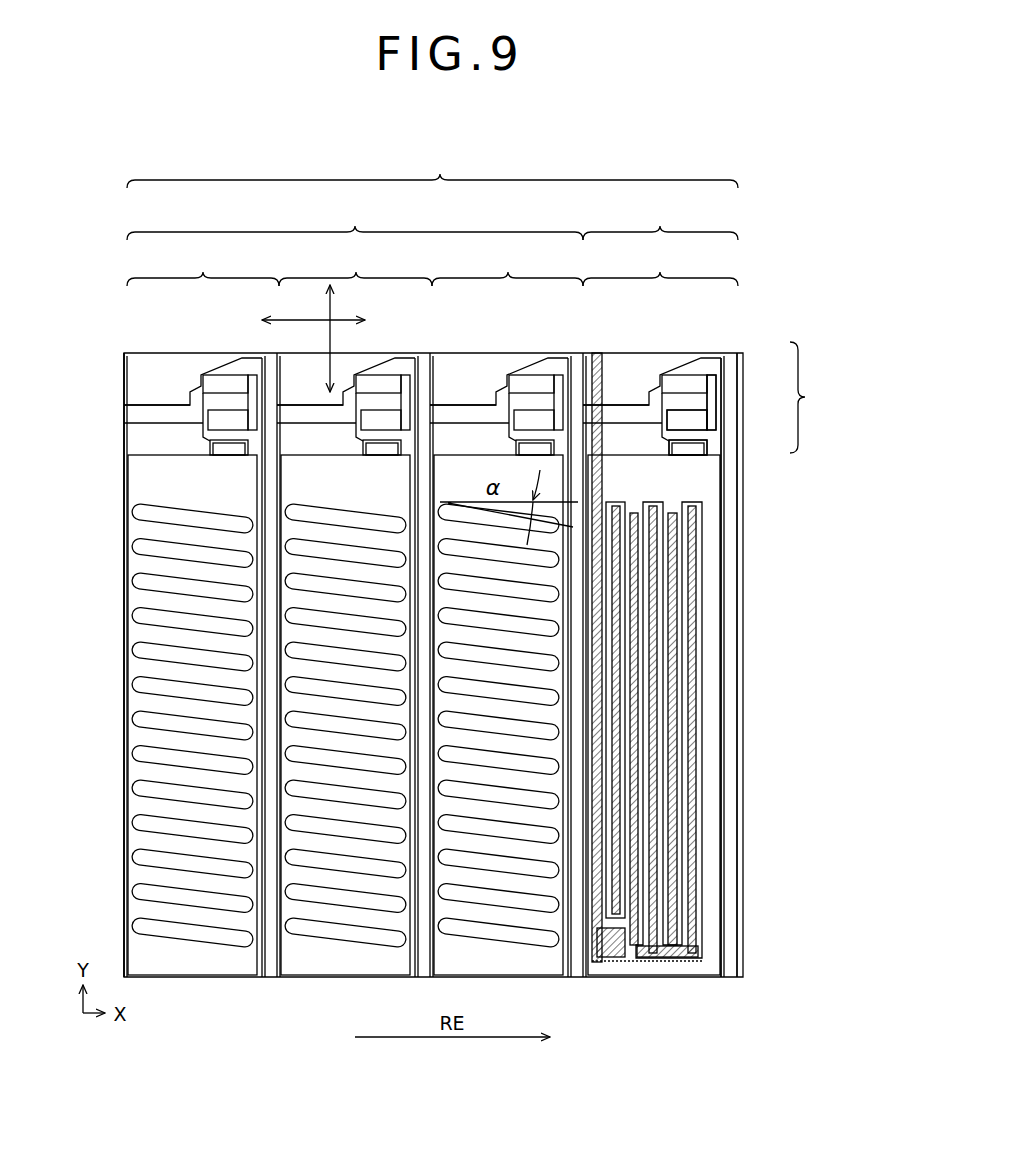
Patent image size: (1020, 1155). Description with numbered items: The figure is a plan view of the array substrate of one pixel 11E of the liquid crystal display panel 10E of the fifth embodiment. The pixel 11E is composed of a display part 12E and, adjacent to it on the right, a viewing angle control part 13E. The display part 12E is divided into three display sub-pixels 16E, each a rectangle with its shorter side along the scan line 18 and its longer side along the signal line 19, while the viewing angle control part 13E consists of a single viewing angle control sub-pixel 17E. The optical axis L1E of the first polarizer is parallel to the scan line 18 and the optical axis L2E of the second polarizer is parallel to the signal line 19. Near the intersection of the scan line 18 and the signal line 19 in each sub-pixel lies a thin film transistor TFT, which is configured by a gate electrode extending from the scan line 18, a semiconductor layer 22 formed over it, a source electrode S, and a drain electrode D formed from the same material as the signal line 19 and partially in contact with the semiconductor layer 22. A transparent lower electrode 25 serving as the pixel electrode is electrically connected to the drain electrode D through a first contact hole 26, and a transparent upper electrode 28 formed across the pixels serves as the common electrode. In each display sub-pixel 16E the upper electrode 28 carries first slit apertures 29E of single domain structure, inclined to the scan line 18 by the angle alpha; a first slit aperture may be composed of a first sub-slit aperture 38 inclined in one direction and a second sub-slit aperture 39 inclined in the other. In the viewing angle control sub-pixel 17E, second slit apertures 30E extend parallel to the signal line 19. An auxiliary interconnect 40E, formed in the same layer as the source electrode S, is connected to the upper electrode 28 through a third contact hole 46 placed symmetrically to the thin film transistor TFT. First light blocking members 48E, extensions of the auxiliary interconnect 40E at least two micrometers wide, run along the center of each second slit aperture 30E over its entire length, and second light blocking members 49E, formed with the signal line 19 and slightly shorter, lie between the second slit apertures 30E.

The liquid crystal display panel 10E is at (90, 158).
The pixel 11E is at (432, 167).
The display part 12E is at (355, 219).
The viewing angle control part 13E is at (660, 219).
The display sub-pixel 16E is at (355, 266).
The viewing angle control sub-pixel 17E is at (660, 266).
The optical axis of the first polarizer L1E is at (313, 308).
The optical axis of the second polarizer L2E is at (315, 338).
The scan line 18 is at (158, 412).
The signal line 19 is at (733, 518).
The semiconductor layer 22 is at (697, 402).
The source electrode S is at (718, 380).
The drain electrode D is at (718, 432).
The thin film transistor TFT is at (818, 397).
The lower electrode 25 is at (135, 897).
The first contact hole 26 is at (700, 466).
The upper electrode 28 is at (160, 468).
The first slit aperture 29E is at (160, 720).
The second slit aperture 30E is at (704, 868).
The first sub-slit aperture 38 is at (160, 600).
The second sub-slit aperture 39 is at (160, 850).
The auxiliary interconnect 40E is at (597, 352).
The third contact hole 46 is at (612, 942).
The first light blocking member 48E is at (652, 930).
The second light blocking member 49E is at (672, 956).